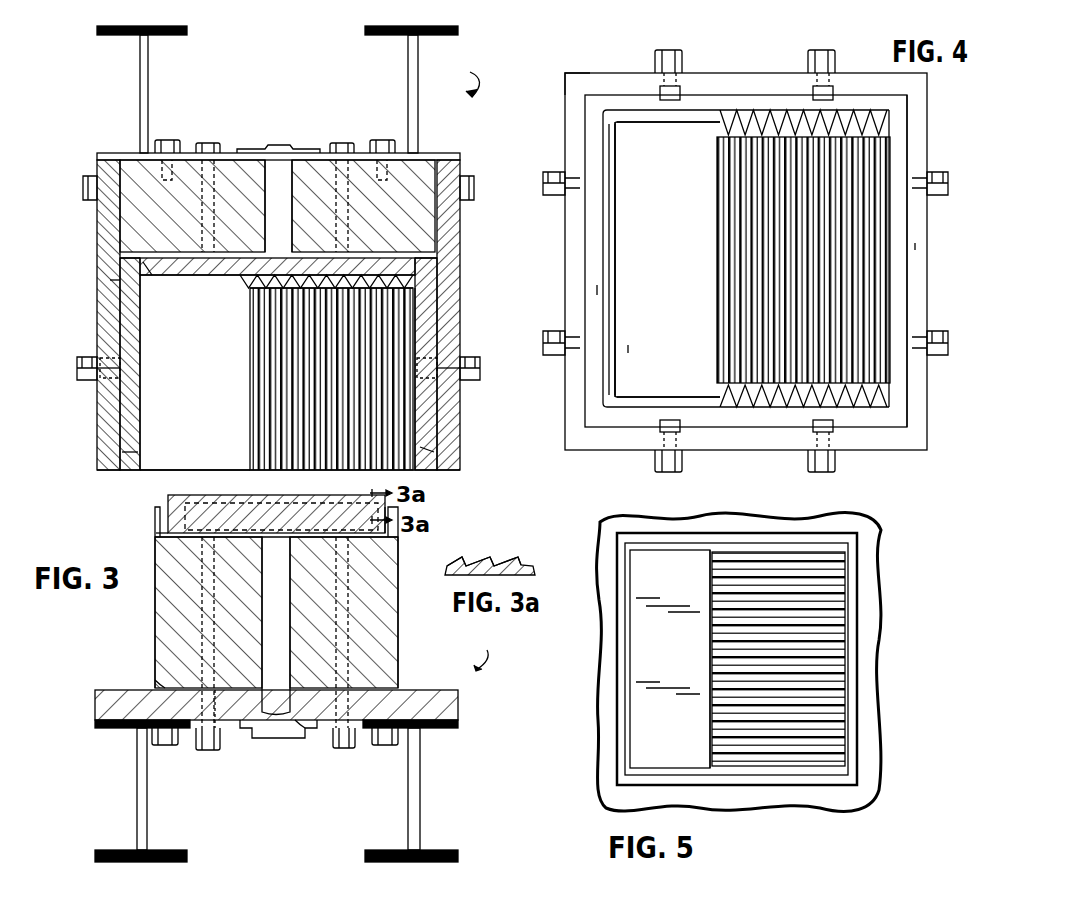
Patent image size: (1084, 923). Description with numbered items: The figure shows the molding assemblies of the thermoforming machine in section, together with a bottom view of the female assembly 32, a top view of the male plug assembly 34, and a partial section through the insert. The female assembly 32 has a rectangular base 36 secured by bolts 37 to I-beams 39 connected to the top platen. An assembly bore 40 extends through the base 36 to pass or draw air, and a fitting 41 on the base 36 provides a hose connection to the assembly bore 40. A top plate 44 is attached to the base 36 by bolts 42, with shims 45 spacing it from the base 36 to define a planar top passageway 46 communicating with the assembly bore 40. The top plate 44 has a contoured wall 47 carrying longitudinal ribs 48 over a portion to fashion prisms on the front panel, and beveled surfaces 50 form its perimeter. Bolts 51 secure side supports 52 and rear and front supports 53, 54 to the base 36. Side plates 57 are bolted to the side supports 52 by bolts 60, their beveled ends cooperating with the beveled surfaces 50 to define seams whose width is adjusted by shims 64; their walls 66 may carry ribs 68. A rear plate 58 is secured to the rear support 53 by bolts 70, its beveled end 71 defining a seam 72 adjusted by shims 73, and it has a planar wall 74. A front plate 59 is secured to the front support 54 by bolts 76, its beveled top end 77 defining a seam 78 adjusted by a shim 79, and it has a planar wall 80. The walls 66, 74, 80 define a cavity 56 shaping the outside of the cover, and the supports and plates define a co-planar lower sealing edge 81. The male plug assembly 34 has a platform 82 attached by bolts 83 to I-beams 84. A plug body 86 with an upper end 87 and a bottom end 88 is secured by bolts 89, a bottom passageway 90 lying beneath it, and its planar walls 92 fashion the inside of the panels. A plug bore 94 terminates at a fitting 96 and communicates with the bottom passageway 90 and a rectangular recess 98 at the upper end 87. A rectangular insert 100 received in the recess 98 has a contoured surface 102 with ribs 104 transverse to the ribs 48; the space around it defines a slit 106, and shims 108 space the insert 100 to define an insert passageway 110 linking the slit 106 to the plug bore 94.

In FIG. 3, the female assembly 32 is at (461, 75).
In FIG. 3, the male plug assembly 34 is at (478, 650).
In FIG. 3, the rectangular base 36 is at (422, 152).
In FIG. 3, the bolts 37 is at (172, 138).
In FIG. 3, the I-beams 39 is at (178, 32).
In FIG. 3, the assembly bore 40 is at (293, 163).
In FIG. 3, the fitting 41 is at (242, 148).
In FIG. 3, the bolts 42 is at (210, 141).
In FIG. 3, the top plate 44 is at (168, 268).
In FIG. 4, the top plate 44 is at (630, 352).
In FIG. 3, the shims 45 is at (248, 224).
In FIG. 3, the top passageway 46 is at (118, 250).
In FIG. 4, the wall 47 is at (669, 216).
In FIG. 3, the longitudinal ribs 48 is at (228, 280).
In FIG. 4, the longitudinal ribs 48 is at (717, 322).
In FIG. 3, the beveled surfaces 50 is at (462, 258).
In FIG. 3, the bolts 51 is at (88, 183).
In FIG. 4, the side supports 52 is at (735, 72).
In FIG. 3, the rear support 53 is at (446, 320).
In FIG. 4, the rear support 53 is at (918, 248).
In FIG. 3, the front support 54 is at (97, 322).
In FIG. 4, the front support 54 is at (568, 270).
In FIG. 3, the cavity 56 is at (227, 374).
In FIG. 4, the side plates 57 is at (613, 108).
In FIG. 3, the rear plate 58 is at (426, 449).
In FIG. 4, the rear plate 58 is at (900, 283).
In FIG. 3, the front plate 59 is at (128, 454).
In FIG. 4, the front plate 59 is at (596, 292).
In FIG. 4, the bolts 60 is at (676, 50).
In FIG. 4, the shims 64 is at (680, 88).
In FIG. 4, the walls 66 is at (668, 124).
In FIG. 3, the ribs 68 is at (266, 336).
In FIG. 4, the ribs 68 is at (885, 124).
In FIG. 3, the bolts 70 is at (480, 372).
In FIG. 4, the bolts 70 is at (946, 172).
In FIG. 3, the beveled end 71 is at (430, 279).
In FIG. 3, the seam 72 is at (426, 289).
In FIG. 3, the shims 73 is at (440, 356).
In FIG. 3, the planar wall 74 is at (418, 411).
In FIG. 4, the planar wall 74 is at (890, 402).
In FIG. 3, the bolts 76 is at (86, 381).
In FIG. 4, the bolts 76 is at (550, 171).
In FIG. 3, the top end 77 is at (112, 283).
In FIG. 3, the seam 78 is at (148, 282).
In FIG. 4, the seam 78 is at (616, 184).
In FIG. 3, the shim 79 is at (112, 358).
In FIG. 3, the planar wall 80 is at (142, 412).
In FIG. 4, the planar wall 80 is at (612, 250).
In FIG. 3, the lower sealing edge 81 is at (100, 472).
In FIG. 4, the lower sealing edge 81 is at (572, 82).
In FIG. 3, the platform 82 is at (459, 703).
In FIG. 5, the platform 82 is at (770, 808).
In FIG. 3, the bolts 83 is at (165, 748).
In FIG. 3, the I-beams 84 is at (147, 832).
In FIG. 3, the plug body 86 is at (388, 645).
In FIG. 3, the upper end 87 is at (156, 510).
In FIG. 5, the upper end 87 is at (840, 541).
In FIG. 3, the bottom end 88 is at (398, 674).
In FIG. 3, the bolts 89 is at (208, 753).
In FIG. 3, the bottom passageway 90 is at (156, 674).
In FIG. 3, the walls 92 is at (155, 615).
In FIG. 3, the plug bore 94 is at (296, 730).
In FIG. 3, the fitting 96 is at (240, 734).
In FIG. 3, the rectangular recess 98 is at (160, 537).
In FIG. 3, the rectangular insert 100 is at (175, 497).
In FIG. 3A, the rectangular insert 100 is at (533, 565).
In FIG. 5, the rectangular insert 100 is at (682, 556).
In FIG. 3, the contoured surface 102 is at (222, 502).
In FIG. 5, the contoured surface 102 is at (688, 643).
In FIG. 3A, the ribs 104 is at (455, 561).
In FIG. 5, the ribs 104 is at (712, 584).
In FIG. 3, the slit 106 is at (392, 534).
In FIG. 5, the slit 106 is at (842, 616).
In FIG. 3, the shims 108 is at (217, 692).
In FIG. 3, the insert passageway 110 is at (165, 532).